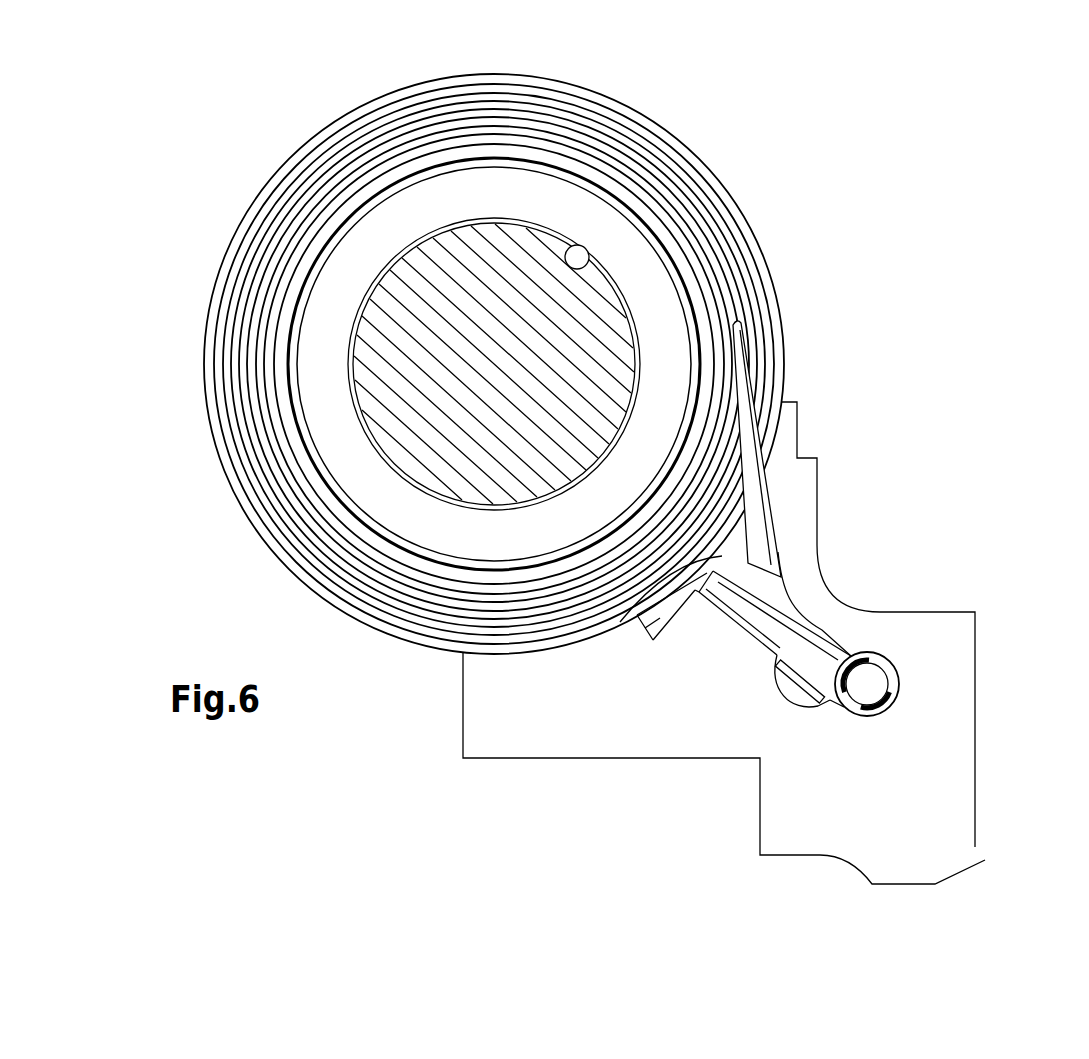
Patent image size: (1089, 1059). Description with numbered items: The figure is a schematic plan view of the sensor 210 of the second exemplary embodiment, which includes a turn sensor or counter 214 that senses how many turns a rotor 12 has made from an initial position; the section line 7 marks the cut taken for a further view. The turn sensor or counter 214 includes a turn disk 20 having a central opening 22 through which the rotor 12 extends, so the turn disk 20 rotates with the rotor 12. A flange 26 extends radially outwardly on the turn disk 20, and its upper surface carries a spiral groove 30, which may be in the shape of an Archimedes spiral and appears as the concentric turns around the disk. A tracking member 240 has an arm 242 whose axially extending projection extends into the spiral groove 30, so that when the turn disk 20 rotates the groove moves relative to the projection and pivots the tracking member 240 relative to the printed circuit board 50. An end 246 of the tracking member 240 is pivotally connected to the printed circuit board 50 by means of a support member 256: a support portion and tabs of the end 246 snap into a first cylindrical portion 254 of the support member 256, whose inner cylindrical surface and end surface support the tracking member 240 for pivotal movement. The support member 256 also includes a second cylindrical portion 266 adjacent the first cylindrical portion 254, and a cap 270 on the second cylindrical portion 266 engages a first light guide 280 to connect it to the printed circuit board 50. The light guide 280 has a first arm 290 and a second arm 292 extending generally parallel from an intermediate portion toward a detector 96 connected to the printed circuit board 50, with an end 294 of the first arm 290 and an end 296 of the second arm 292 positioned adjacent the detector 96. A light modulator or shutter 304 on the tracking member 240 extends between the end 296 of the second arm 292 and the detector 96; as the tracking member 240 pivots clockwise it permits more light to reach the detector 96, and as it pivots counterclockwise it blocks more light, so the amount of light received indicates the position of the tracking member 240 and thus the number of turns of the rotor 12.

The section line 7- 7 is at (263, 130).
The rotor 12 is at (400, 385).
The turn disk 20 is at (400, 92).
The central opening 22 is at (583, 246).
The flange 26 is at (722, 208).
The spiral groove 30 is at (727, 292).
The printed circuit board 50 is at (847, 825).
The detector 96 is at (662, 622).
The sensor 210 is at (781, 129).
The turn sensor or counter 214 is at (859, 590).
The tracking member 240 is at (786, 618).
The arm 242 is at (745, 428).
The end of the tracking member 246 is at (863, 684).
The first cylindrical portion 254 is at (898, 710).
The support member 256 is at (897, 683).
The second cylindrical portion 266 is at (791, 712).
The cap 270 is at (812, 718).
The first light guide 280 is at (760, 667).
The first arm 290 is at (728, 634).
The second arm 292 is at (778, 552).
The end of the first arm 294 is at (692, 626).
The end of the second arm 296 is at (655, 603).
The light modulator or shutter 304 is at (722, 556).